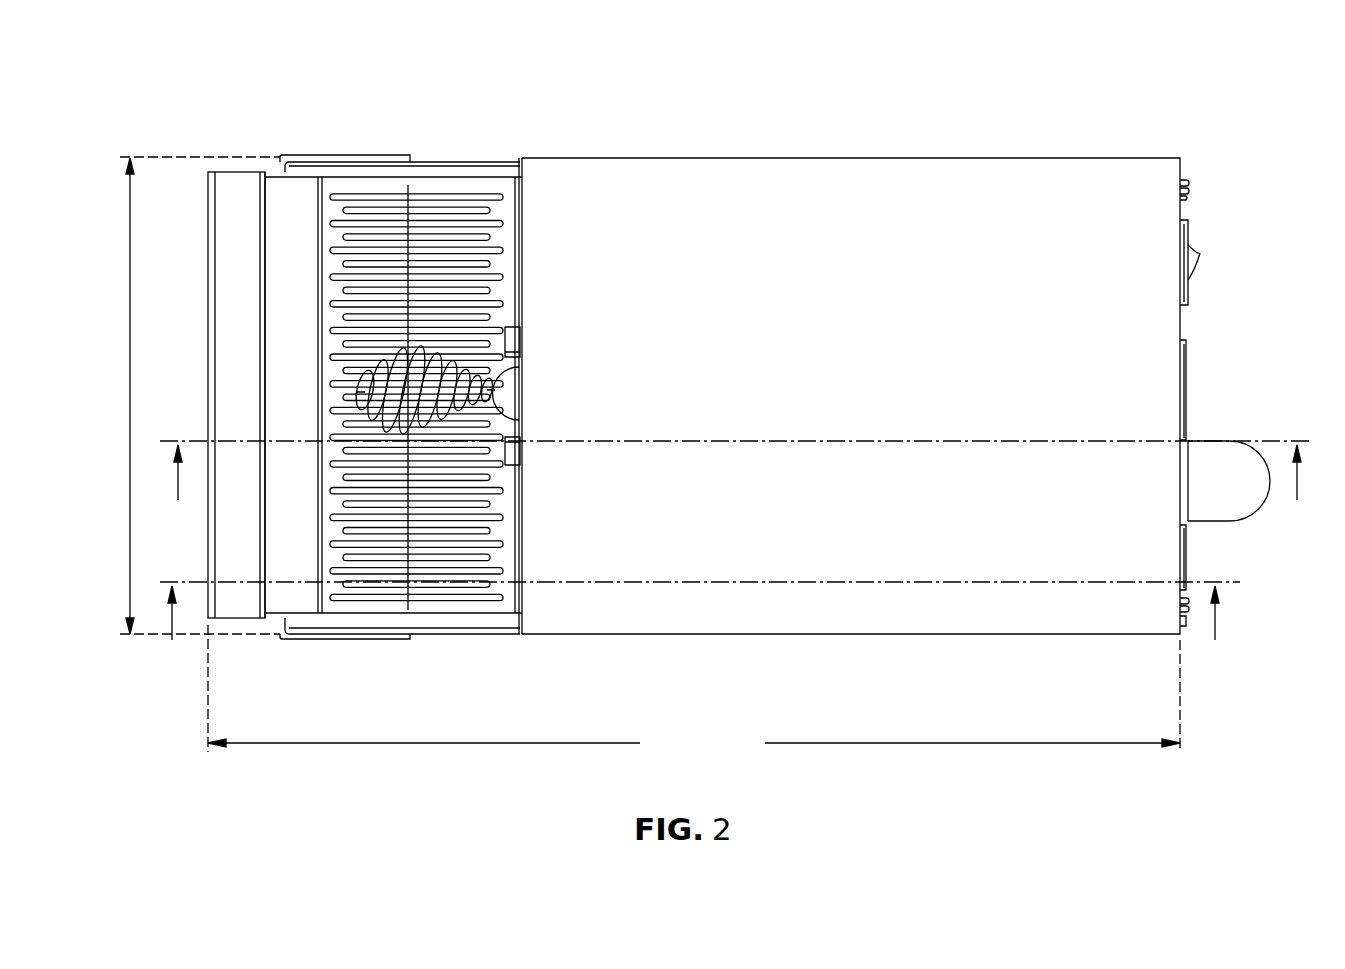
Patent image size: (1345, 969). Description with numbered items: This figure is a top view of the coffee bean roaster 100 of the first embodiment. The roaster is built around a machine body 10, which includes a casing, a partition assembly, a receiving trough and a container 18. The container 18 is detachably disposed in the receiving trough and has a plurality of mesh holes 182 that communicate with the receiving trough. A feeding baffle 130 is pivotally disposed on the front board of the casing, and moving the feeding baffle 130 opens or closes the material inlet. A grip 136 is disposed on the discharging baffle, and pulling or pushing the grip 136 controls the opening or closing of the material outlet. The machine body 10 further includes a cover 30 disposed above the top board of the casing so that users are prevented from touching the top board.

The coffee bean roaster 100 is at (1205, 97).
The machine body 10 is at (1100, 158).
The cover 30 is at (582, 177).
The container 18 is at (270, 170).
The mesh holes 182 is at (487, 192).
The grip 136 is at (410, 355).
The feeding baffle 130 is at (515, 328).